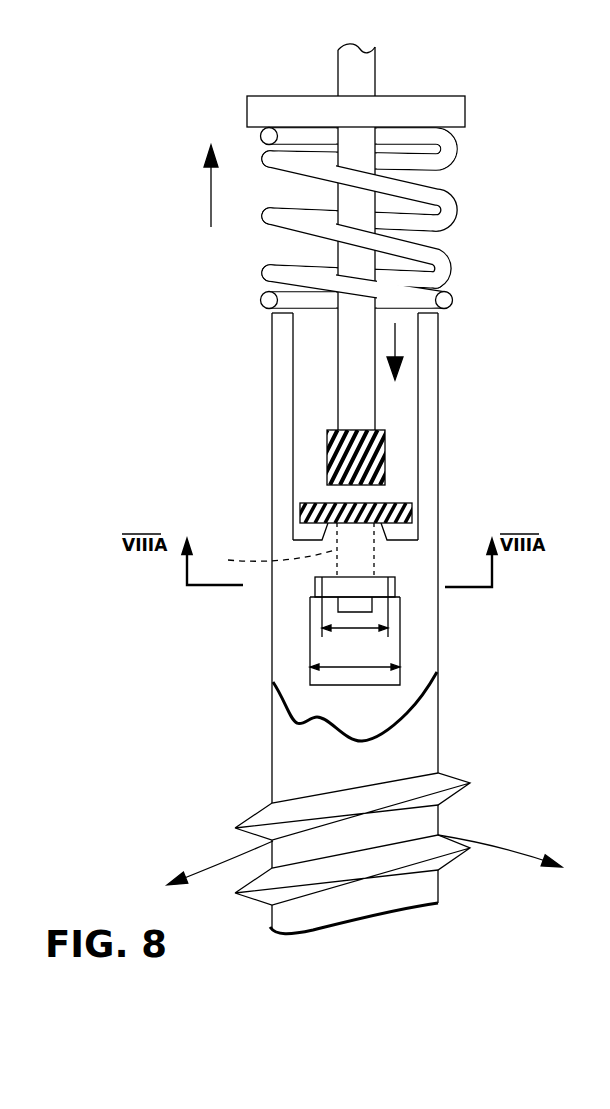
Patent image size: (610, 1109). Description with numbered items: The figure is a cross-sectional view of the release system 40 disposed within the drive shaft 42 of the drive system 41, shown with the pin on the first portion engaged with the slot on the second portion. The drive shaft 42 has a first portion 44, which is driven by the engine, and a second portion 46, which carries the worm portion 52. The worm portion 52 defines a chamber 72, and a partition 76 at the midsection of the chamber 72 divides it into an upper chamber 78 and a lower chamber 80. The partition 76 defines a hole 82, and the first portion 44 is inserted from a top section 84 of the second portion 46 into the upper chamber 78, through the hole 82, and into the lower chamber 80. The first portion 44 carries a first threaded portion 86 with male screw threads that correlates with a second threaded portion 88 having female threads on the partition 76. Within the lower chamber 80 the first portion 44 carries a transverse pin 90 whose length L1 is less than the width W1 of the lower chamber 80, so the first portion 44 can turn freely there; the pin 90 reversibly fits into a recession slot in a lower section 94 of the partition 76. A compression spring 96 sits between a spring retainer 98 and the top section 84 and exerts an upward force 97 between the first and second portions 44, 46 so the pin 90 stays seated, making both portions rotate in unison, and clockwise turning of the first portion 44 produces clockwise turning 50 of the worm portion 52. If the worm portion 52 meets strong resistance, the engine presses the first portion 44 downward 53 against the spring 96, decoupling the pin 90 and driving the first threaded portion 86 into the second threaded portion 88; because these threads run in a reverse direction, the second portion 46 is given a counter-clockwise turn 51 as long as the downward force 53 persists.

The drive system 41 is at (332, 71).
The spring retainer 98 is at (448, 116).
The compression spring 96 is at (443, 160).
The upward force 97 is at (211, 192).
The top section 84 is at (448, 296).
The downward force 53 is at (396, 347).
The first portion of the drive shaft 44 is at (332, 347).
The drive shaft 42 is at (443, 356).
The upper chamber 78 is at (396, 414).
The release system 40 is at (426, 455).
The first threaded portion 86 is at (330, 441).
The second threaded portion 88 is at (297, 494).
The partition 76 is at (398, 560).
The hole 82 is at (266, 558).
The lower section of the partition 94 is at (322, 578).
The pin 90 is at (338, 588).
The chamber 72 is at (332, 684).
The lower chamber 80 is at (390, 687).
The length of the pin L1 is at (353, 630).
The width of the lower chamber W1 is at (347, 665).
The second portion of the drive shaft 46 is at (304, 753).
The worm portion 52 is at (478, 780).
The counter-clockwise turn 51 is at (516, 854).
The clockwise turning 50 is at (205, 866).